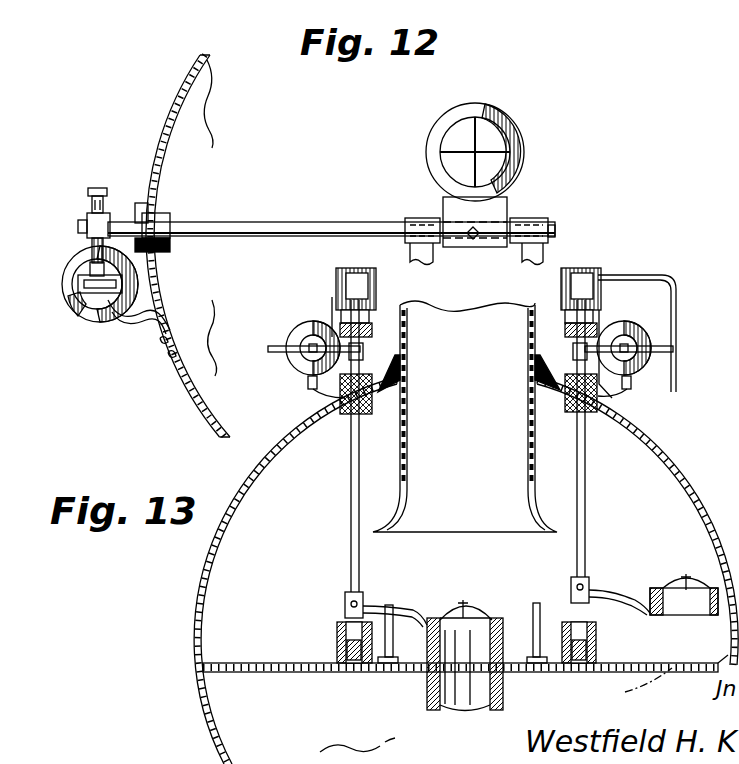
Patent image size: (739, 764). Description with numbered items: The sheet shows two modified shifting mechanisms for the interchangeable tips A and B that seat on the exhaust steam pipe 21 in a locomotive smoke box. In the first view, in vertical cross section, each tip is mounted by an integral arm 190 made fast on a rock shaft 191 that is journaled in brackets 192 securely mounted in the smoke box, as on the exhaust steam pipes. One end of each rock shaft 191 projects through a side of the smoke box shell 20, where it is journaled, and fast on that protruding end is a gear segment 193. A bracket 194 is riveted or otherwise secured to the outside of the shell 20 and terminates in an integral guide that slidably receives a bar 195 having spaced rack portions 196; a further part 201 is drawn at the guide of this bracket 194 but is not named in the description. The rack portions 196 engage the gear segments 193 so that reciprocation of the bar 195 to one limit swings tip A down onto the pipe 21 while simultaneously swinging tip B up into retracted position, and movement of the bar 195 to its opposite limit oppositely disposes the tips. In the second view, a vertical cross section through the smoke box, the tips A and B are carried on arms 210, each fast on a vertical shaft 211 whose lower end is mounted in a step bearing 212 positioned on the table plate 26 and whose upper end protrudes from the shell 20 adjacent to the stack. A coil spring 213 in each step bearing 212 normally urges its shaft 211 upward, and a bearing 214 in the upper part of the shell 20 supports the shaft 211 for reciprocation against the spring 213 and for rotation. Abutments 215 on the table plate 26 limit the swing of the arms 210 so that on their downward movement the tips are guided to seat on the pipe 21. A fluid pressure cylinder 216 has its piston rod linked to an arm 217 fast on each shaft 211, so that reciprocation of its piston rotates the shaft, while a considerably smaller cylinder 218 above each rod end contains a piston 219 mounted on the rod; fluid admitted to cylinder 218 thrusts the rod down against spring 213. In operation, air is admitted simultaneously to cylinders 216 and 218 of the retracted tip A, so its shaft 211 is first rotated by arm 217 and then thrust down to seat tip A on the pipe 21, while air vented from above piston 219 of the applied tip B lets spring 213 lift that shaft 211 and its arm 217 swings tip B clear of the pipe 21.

In FIG. 12, the smoke box shell 20 is at (190, 81).
In FIG. 13, the smoke box shell 20 is at (200, 610).
In FIG. 12, the rock shaft 191 is at (338, 227).
In FIG. 12, the gear segment 193 is at (103, 187).
In FIG. 12, the rack portions 196 is at (83, 272).
In FIG. 12, the clamp ring 201 is at (67, 297).
In FIG. 12, the bar 195 is at (88, 303).
In FIG. 12, the bracket 194 is at (133, 326).
In FIG. 12, the arm 190 is at (493, 207).
In FIG. 12, the tip A is at (518, 127).
In FIG. 13, the tip A is at (680, 617).
In FIG. 12, the brackets 192 is at (522, 253).
In FIG. 13, the table plate 26 is at (300, 672).
In FIG. 13, the cylinder 218 is at (343, 268).
In FIG. 13, the piston 219 is at (378, 289).
In FIG. 13, the fluid pressure cylinder 216 is at (340, 330).
In FIG. 13, the arm 217 is at (333, 279).
In FIG. 13, the bearing 214 is at (347, 413).
In FIG. 13, the vertical shaft 211 is at (351, 503).
In FIG. 13, the arms 210 is at (376, 606).
In FIG. 13, the abutments 215 is at (393, 603).
In FIG. 13, the step bearing 212 is at (337, 637).
In FIG. 13, the coil spring 213 is at (352, 673).
In FIG. 13, the exhaust steam pipe 21 is at (487, 700).
In FIG. 13, the tip B is at (475, 612).